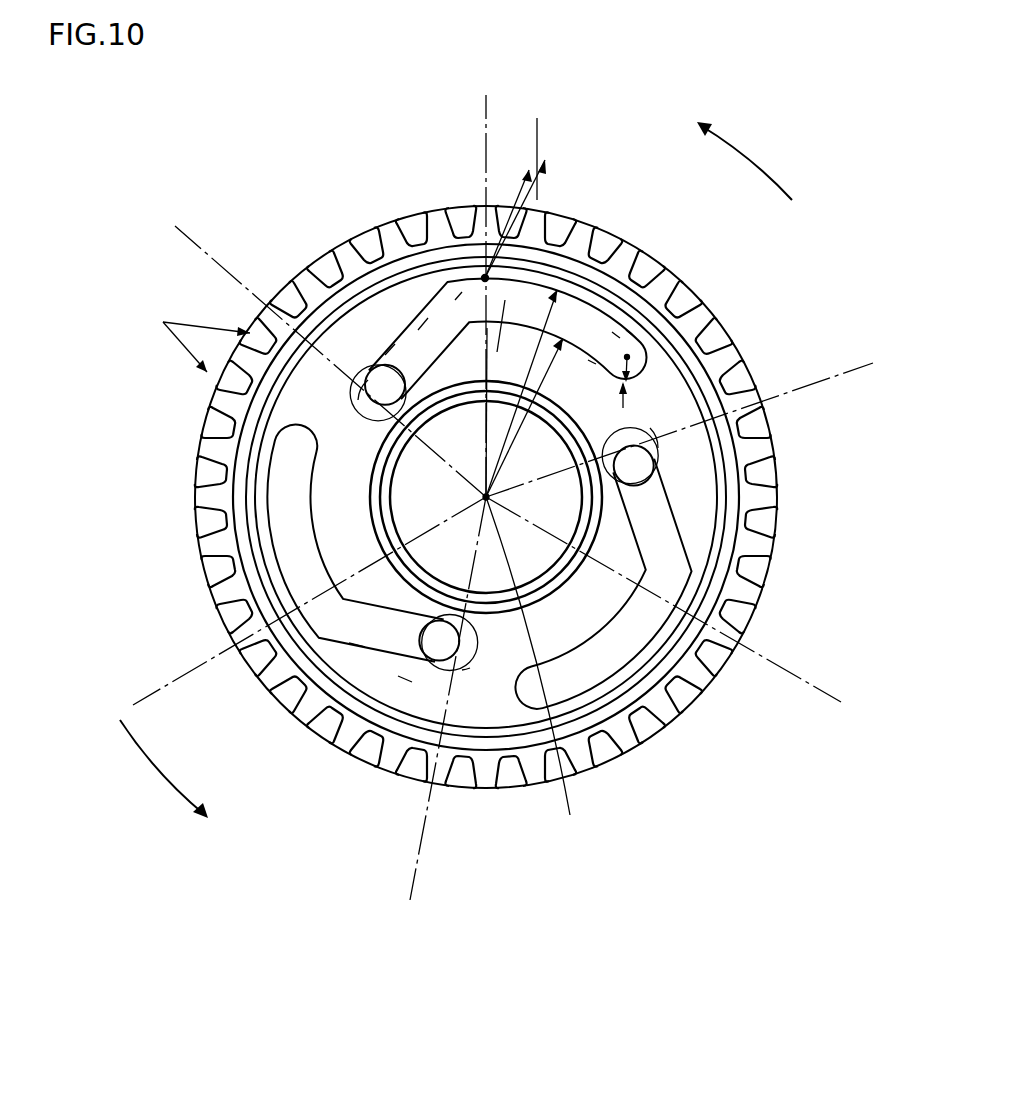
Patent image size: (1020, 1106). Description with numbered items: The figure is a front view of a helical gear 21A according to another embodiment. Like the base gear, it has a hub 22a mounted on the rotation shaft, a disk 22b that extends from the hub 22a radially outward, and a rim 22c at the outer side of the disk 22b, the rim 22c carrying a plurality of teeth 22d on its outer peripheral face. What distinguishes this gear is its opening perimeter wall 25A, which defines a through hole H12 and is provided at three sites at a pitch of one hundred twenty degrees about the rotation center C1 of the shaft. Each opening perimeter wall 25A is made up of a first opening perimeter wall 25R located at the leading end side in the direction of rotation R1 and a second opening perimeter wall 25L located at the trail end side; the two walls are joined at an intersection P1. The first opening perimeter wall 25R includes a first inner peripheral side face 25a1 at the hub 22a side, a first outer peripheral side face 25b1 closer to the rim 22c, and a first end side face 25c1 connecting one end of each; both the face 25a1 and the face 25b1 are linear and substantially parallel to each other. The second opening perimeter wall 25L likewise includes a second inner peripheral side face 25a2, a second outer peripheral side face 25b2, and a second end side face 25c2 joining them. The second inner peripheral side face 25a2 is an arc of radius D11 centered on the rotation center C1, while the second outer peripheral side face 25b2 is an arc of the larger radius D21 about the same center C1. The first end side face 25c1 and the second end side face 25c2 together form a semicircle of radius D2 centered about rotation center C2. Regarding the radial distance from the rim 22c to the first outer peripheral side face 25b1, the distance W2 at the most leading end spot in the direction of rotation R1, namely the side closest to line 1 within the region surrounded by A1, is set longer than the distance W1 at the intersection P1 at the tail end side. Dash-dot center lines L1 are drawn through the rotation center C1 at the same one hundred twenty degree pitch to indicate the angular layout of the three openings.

The helical gear 21A is at (724, 712).
The hub 22a is at (268, 478).
The disk 22b is at (357, 647).
The rim 22c is at (405, 680).
The teeth 22d is at (275, 672).
The opening perimeter wall 25A is at (548, 358).
The first opening perimeter wall 25R is at (460, 161).
The second opening perimeter wall 25L is at (743, 172).
The first outer peripheral side face 25b1 is at (380, 362).
The first inner peripheral side face 25a1 is at (423, 336).
The first end side face 25c1 is at (460, 306).
The second outer peripheral side face 25b2 is at (588, 364).
The second inner peripheral side face 25a2 is at (615, 334).
The second end side face 25c2 is at (630, 332).
The center line L1 is at (484, 99).
The line 1 is at (528, 565).
The intersection P1 is at (485, 276).
The distance W1 is at (515, 198).
The distance W2 is at (198, 347).
The direction of rotation R1 is at (449, 470).
The region A1 is at (356, 402).
The through hole H12 is at (511, 337).
The rotation center C2 is at (613, 359).
The radius D2 is at (608, 401).
The radius D21 is at (489, 412).
The radius D11 is at (524, 393).
The rotation center C1 is at (531, 667).